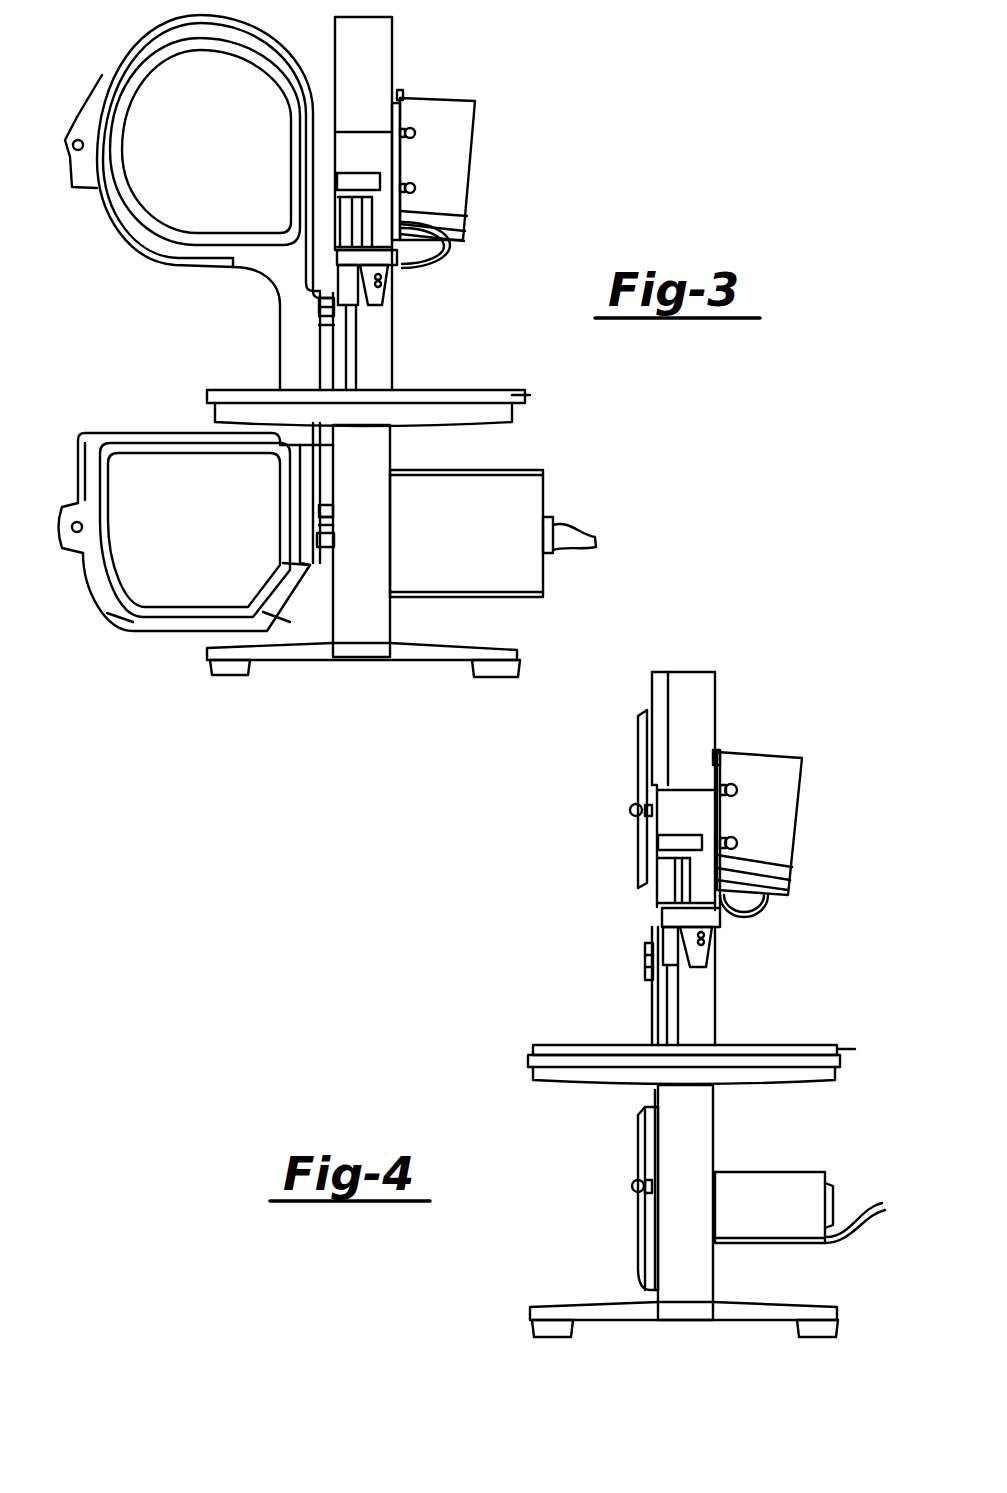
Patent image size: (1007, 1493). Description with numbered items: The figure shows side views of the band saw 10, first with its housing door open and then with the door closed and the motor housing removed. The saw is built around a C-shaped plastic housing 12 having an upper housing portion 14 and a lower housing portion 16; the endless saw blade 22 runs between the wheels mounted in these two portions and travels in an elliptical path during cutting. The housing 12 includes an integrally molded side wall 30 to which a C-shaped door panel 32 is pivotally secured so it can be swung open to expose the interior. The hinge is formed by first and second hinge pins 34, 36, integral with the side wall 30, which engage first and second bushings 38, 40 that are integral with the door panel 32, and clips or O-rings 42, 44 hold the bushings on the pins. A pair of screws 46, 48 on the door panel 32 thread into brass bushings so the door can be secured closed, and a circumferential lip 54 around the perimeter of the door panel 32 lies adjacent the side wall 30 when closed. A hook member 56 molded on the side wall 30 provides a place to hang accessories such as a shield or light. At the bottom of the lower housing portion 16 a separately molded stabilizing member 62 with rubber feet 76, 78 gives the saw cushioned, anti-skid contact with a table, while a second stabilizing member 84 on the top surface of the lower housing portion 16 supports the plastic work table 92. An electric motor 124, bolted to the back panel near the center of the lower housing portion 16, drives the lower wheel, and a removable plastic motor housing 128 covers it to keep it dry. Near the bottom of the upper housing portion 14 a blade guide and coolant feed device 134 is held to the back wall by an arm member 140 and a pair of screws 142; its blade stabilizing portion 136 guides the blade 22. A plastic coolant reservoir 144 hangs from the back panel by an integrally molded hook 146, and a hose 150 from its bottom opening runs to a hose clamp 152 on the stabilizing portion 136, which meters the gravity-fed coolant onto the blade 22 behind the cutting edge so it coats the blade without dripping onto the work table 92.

In FIG. 3, the band saw 10 is at (534, 142).
In FIG. 4, the band saw 10 is at (531, 968).
In FIG. 3, the housing 12 is at (392, 38).
In FIG. 4, the housing 12 is at (713, 673).
In FIG. 3, the upper housing portion 14 is at (378, 62).
In FIG. 4, the upper housing portion 14 is at (680, 683).
In FIG. 3, the lower housing portion 16 is at (377, 617).
In FIG. 4, the lower housing portion 16 is at (697, 1272).
In FIG. 3, the saw blade 22 is at (350, 366).
In FIG. 4, the saw blade 22 is at (673, 892).
In FIG. 3, the side wall 30 is at (410, 392).
In FIG. 4, the side wall 30 is at (698, 1138).
In FIG. 3, the door panel 32 is at (117, 228).
In FIG. 4, the door panel 32 is at (639, 1155).
In FIG. 3, the first hinge pin 34 is at (320, 350).
In FIG. 4, the first hinge pin 34 is at (648, 985).
In FIG. 3, the second hinge pin 36 is at (335, 548).
In FIG. 3, the first bushing 38 is at (327, 310).
In FIG. 4, the first bushing 38 is at (648, 958).
In FIG. 3, the second bushing 40 is at (333, 537).
In FIG. 3, the clip or O-ring 42 is at (330, 289).
In FIG. 3, the clip or O-ring 44 is at (333, 510).
In FIG. 3, the screw 46 is at (100, 195).
In FIG. 4, the screw 46 is at (630, 812).
In FIG. 3, the screw 48 is at (82, 527).
In FIG. 4, the screw 48 is at (633, 1188).
In FIG. 3, the circumferential lip 54 is at (135, 38).
In FIG. 4, the circumferential lip 54 is at (660, 730).
In FIG. 3, the hook member 56 is at (350, 181).
In FIG. 4, the hook member 56 is at (675, 840).
In FIG. 3, the stabilizing member 62 is at (317, 655).
In FIG. 4, the stabilizing member 62 is at (640, 1312).
In FIG. 3, the rubber foot 76 is at (227, 675).
In FIG. 4, the rubber foot 76 is at (563, 1328).
In FIG. 3, the rubber foot 78 is at (488, 677).
In FIG. 4, the rubber foot 78 is at (817, 1328).
In FIG. 3, the stabilizing member 84 is at (509, 426).
In FIG. 4, the stabilizing member 84 is at (815, 1078).
In FIG. 3, the work table 92 is at (510, 393).
In FIG. 4, the work table 92 is at (591, 1049).
In FIG. 4, the electric motor 124 is at (803, 1183).
In FIG. 3, the motor housing 128 is at (553, 522).
In FIG. 3, the blade guide and coolant feed device 134 is at (372, 300).
In FIG. 4, the blade guide and coolant feed device 134 is at (692, 950).
In FIG. 3, the blade stabilizing portion 136 is at (345, 252).
In FIG. 4, the blade stabilizing portion 136 is at (682, 958).
In FIG. 3, the arm member 140 is at (402, 258).
In FIG. 4, the arm member 140 is at (792, 860).
In FIG. 3, the screws 142 is at (417, 133).
In FIG. 4, the screws 142 is at (737, 843).
In FIG. 3, the coolant reservoir 144 is at (455, 132).
In FIG. 4, the coolant reservoir 144 is at (788, 778).
In FIG. 4, the hook 146 is at (716, 757).
In FIG. 3, the hose 150 is at (447, 248).
In FIG. 4, the hose 150 is at (778, 900).
In FIG. 3, the hose clamp 152 is at (390, 288).
In FIG. 4, the hose clamp 152 is at (710, 935).